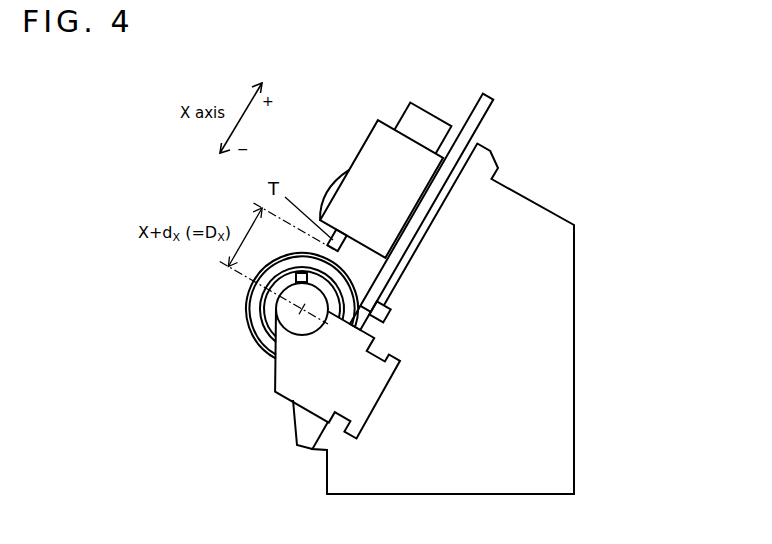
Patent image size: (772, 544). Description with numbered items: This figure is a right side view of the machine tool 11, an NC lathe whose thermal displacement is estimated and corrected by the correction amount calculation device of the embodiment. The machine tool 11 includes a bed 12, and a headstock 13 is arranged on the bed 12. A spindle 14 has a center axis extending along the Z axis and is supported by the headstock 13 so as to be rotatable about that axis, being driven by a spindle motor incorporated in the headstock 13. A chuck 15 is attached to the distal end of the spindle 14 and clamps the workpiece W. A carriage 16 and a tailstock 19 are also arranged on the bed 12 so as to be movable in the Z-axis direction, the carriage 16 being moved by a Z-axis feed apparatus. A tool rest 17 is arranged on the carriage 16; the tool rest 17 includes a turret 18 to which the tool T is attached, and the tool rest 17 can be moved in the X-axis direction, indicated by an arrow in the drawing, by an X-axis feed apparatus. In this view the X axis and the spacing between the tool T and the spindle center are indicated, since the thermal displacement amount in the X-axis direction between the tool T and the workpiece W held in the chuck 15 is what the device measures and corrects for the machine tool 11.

The machine tool 11 is at (684, 107).
The bed 12 is at (577, 225).
The headstock 13 is at (247, 299).
The spindle 14 is at (259, 313).
The chuck 15 is at (263, 333).
The carriage 16 is at (491, 97).
The tool rest 17 is at (389, 129).
The turret 18 is at (332, 187).
The tailstock 19 is at (292, 400).